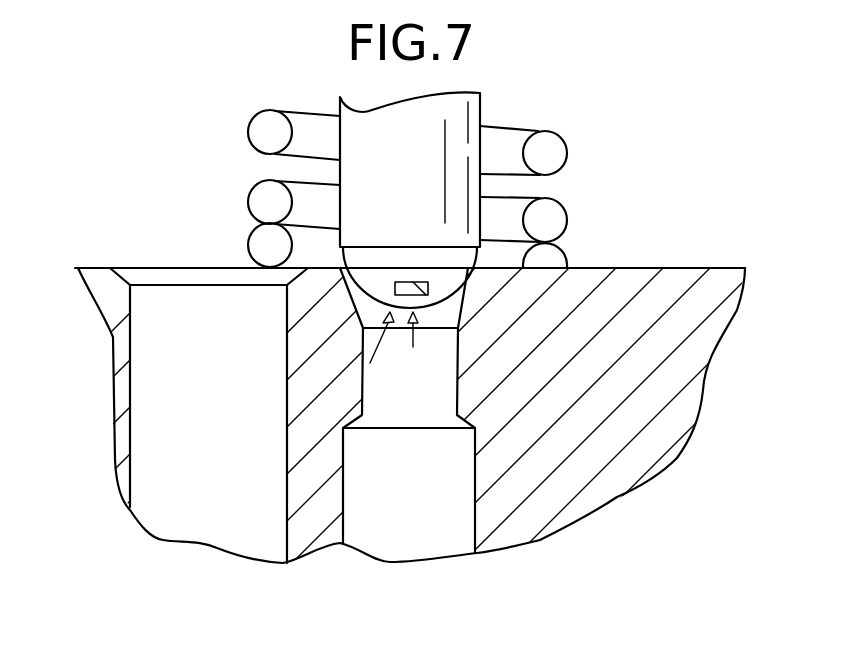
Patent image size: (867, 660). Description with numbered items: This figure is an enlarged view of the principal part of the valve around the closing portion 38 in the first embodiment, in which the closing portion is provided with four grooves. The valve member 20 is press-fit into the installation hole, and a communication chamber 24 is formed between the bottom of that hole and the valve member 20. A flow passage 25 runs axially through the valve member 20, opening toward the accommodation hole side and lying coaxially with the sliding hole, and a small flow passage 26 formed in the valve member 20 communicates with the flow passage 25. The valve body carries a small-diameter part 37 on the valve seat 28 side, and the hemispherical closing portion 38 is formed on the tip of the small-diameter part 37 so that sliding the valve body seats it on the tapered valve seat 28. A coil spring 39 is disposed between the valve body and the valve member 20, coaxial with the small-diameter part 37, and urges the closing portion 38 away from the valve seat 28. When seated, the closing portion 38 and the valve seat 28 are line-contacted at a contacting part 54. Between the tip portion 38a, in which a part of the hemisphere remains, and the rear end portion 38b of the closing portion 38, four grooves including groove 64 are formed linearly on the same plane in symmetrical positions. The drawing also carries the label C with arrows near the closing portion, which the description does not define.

The valve member 20 is at (700, 268).
The communication chamber 24 is at (765, 127).
The flow passage 25 is at (474, 510).
The small flow passage 26 is at (449, 388).
The valve seat 28 is at (360, 297).
The small-diameter part 37 is at (381, 182).
The closing portion 38 is at (285, 467).
The tip portion 38a is at (382, 320).
The rear end portion 38b is at (355, 268).
The coil spring 39 is at (270, 132).
The contacting part 54 is at (428, 292).
The groove 64 is at (440, 306).
The clearance C is at (394, 337).